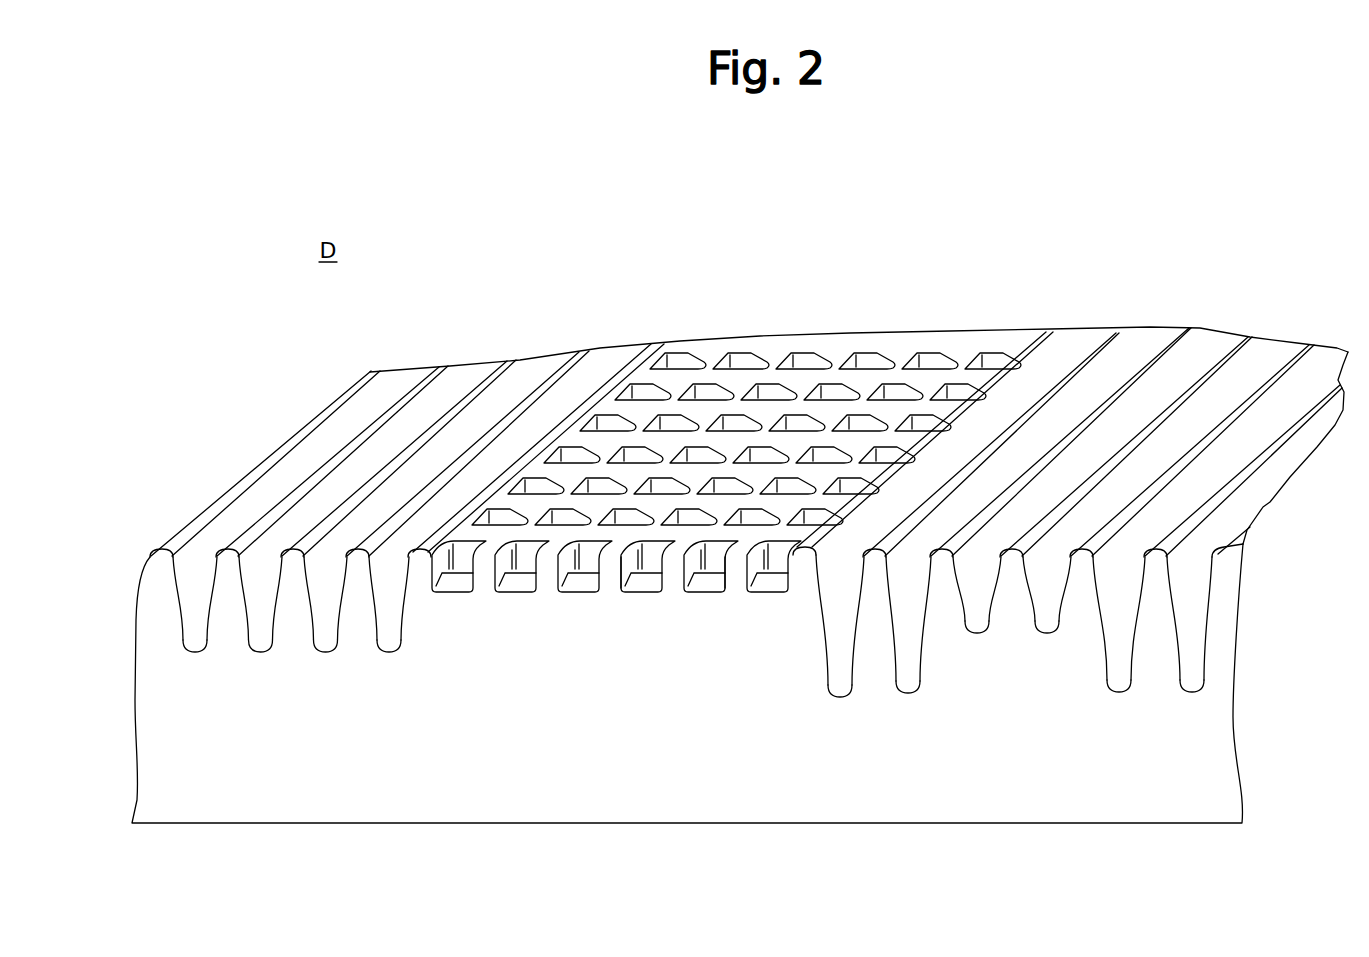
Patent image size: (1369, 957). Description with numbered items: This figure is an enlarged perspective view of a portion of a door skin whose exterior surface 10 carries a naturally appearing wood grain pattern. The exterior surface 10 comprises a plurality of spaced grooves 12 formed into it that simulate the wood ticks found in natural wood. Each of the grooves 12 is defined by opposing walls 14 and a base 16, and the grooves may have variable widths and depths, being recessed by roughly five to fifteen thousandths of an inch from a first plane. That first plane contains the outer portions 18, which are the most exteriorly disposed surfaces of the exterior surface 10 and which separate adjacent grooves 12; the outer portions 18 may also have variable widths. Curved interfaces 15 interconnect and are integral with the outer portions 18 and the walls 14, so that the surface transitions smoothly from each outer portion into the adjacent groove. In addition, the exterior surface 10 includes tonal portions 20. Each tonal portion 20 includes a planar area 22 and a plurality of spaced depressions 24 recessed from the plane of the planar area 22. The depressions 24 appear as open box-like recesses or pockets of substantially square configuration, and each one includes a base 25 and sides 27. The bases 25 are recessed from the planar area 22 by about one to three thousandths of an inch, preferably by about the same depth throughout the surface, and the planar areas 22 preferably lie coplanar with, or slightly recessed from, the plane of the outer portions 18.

The exterior surface 10 is at (1105, 243).
The grooves 12 is at (1147, 341).
The walls 14 is at (312, 612).
The interfaces 15 is at (182, 556).
The base 16 is at (198, 642).
The outer portions 18 is at (380, 366).
The tonal portions 20 is at (843, 298).
The planar area 22 is at (719, 350).
The depressions 24 is at (880, 353).
The base 25 is at (762, 585).
The sides 27 is at (628, 576).